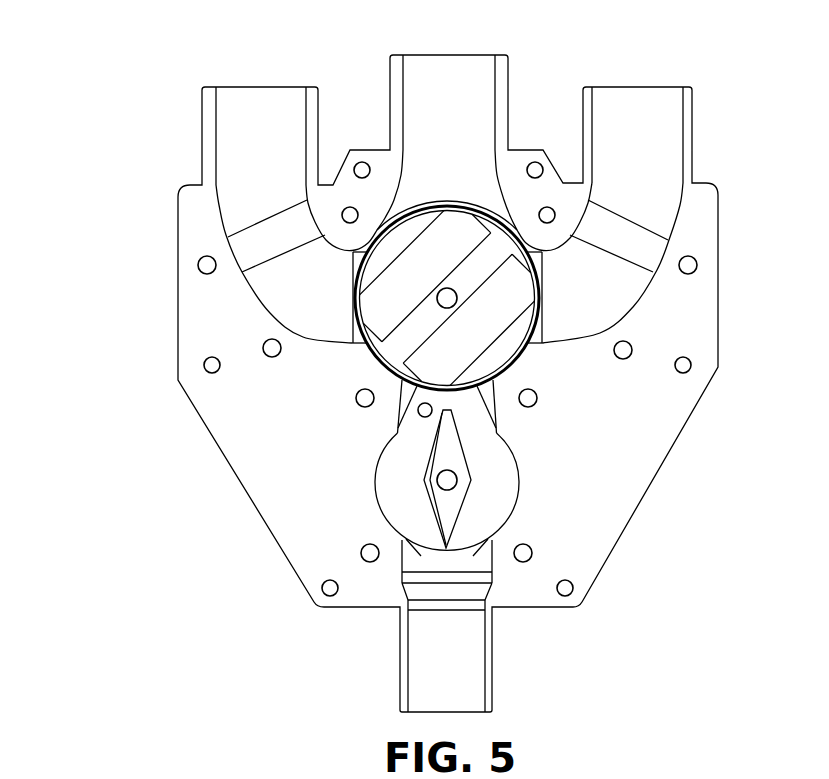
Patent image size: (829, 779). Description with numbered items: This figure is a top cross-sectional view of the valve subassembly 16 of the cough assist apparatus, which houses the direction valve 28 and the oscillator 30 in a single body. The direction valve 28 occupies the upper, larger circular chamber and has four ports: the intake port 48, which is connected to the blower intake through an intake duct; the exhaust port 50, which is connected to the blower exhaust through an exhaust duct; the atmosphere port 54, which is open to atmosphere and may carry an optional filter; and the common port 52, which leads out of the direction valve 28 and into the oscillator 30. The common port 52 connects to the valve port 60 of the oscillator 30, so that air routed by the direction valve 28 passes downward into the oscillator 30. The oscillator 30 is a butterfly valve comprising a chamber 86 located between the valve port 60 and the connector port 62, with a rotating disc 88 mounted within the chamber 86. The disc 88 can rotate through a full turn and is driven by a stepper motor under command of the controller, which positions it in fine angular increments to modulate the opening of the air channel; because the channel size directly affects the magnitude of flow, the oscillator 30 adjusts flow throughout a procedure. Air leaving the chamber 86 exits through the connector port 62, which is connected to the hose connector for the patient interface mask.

The valve subassembly 16 is at (112, 190).
The direction valve 28 is at (366, 368).
The oscillator 30 is at (463, 506).
The intake port 48 is at (645, 86).
The exhaust port 50 is at (270, 87).
The common port 52 is at (496, 382).
The atmosphere port 54 is at (438, 54).
The valve port 60 is at (392, 430).
The connector port 62 is at (493, 645).
The chamber 86 is at (518, 468).
The rotating disc 88 is at (427, 500).